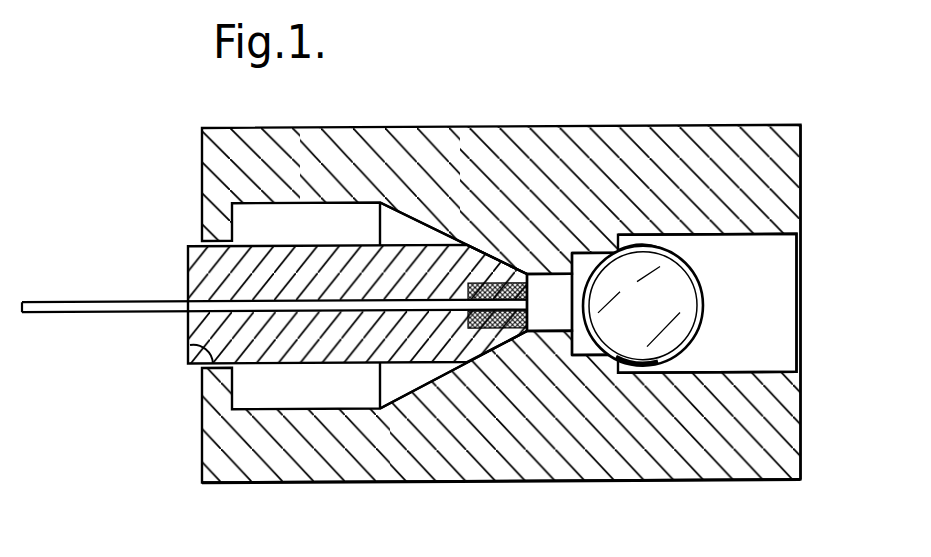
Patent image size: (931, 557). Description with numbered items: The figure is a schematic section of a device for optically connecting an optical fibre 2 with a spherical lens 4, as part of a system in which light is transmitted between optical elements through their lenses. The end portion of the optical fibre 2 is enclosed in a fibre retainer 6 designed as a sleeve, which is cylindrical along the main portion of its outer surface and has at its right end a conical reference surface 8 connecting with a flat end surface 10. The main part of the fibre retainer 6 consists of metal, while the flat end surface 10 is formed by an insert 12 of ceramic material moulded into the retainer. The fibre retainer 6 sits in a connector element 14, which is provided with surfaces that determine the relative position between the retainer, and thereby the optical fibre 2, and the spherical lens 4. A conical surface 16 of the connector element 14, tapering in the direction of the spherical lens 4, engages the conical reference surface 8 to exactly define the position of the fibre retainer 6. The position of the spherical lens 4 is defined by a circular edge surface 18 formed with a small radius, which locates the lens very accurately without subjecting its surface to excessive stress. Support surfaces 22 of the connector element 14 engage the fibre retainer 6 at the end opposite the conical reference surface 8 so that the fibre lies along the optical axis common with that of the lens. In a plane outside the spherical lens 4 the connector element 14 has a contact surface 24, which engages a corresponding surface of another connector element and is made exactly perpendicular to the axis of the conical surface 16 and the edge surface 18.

The optical fibre 2 is at (100, 313).
The spherical lens 4 is at (692, 307).
The fibre retainer 6 is at (228, 274).
The conical reference surface 8 is at (528, 279).
The flat end surface 10 is at (572, 259).
The insert 12 is at (482, 333).
The connector element 14 is at (424, 167).
The conical surface 16 is at (413, 235).
The circular edge surface 18 is at (640, 255).
The support surfaces 22 is at (190, 346).
The contact surface 24 is at (803, 466).